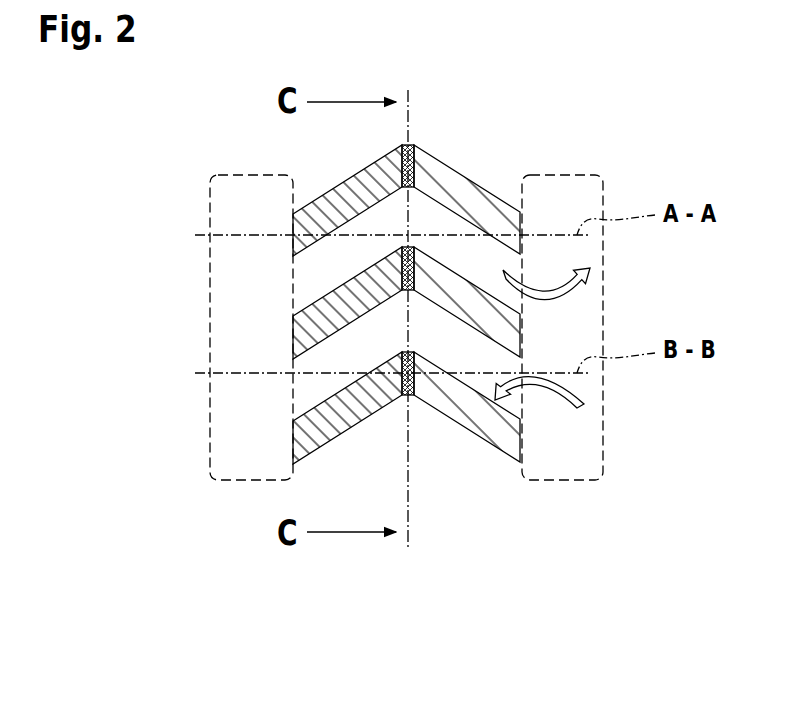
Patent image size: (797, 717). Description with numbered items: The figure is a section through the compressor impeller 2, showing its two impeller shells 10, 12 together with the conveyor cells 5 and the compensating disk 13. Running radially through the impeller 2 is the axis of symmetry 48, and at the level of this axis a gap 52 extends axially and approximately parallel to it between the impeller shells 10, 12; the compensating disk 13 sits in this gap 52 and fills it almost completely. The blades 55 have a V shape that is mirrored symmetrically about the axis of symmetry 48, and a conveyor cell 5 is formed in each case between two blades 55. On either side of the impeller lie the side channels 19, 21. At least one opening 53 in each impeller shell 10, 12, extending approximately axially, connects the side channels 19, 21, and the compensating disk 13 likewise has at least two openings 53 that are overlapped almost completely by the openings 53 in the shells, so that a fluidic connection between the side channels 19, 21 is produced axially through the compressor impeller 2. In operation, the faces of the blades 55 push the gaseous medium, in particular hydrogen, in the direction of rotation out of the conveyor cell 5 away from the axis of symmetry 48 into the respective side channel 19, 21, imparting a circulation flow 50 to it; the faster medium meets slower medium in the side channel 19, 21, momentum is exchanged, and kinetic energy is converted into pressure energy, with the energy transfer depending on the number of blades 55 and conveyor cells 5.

The compressor impeller 2 is at (158, 160).
The conveyor cell 5 is at (435, 349).
The impeller shell 10 is at (328, 207).
The impeller shell 12 is at (487, 207).
The compensating disk 13 is at (410, 147).
The side channel 19 is at (208, 480).
The side channel 21 is at (606, 480).
The axis of symmetry 48 is at (410, 474).
The circulation flow 50 is at (585, 284).
The gap 52 is at (408, 321).
The opening 53 is at (427, 330).
The blade 55 is at (305, 225).